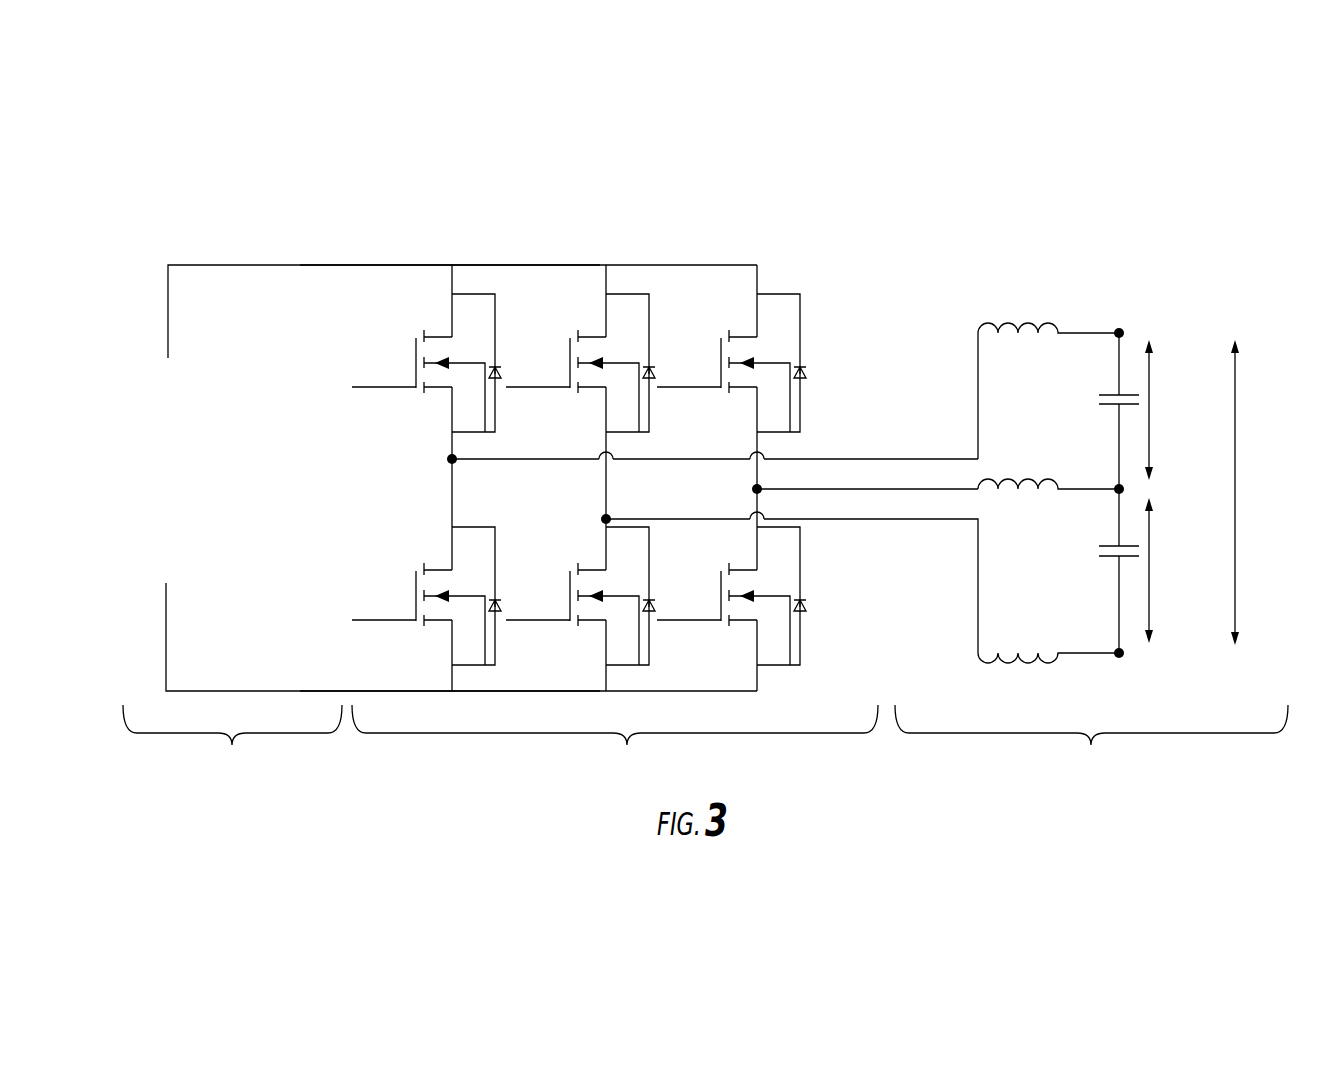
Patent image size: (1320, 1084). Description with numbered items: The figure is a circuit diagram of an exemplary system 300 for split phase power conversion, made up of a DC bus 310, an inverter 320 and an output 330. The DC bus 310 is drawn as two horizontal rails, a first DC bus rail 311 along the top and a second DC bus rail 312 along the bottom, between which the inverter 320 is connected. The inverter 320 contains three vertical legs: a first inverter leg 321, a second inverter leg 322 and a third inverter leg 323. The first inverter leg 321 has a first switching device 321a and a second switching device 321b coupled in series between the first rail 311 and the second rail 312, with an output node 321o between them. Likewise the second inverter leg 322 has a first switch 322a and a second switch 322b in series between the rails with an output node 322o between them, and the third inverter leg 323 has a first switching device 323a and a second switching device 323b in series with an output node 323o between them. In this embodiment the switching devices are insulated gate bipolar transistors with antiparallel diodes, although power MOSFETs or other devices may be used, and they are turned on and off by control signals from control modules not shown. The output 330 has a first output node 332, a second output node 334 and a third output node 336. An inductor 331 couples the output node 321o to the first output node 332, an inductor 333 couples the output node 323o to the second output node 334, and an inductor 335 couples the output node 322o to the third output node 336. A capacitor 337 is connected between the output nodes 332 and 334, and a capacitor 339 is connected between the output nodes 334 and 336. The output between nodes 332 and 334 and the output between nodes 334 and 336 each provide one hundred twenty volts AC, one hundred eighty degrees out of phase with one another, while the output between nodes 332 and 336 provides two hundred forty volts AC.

The system 300 is at (1116, 182).
The DC bus 310 is at (440, 521).
The first DC bus rail 311 is at (215, 263).
The second DC bus rail 312 is at (212, 690).
The inverter 320 is at (615, 743).
The first inverter leg 321 is at (446, 255).
The first switching device 321a is at (412, 372).
The second switching device 321b is at (412, 603).
The output node 321o is at (448, 459).
The second inverter leg 322 is at (601, 255).
The first switch 322a is at (566, 372).
The second switch 322b is at (566, 603).
The output node 322o is at (600, 519).
The third inverter leg 323 is at (752, 255).
The first switching device 323a is at (718, 372).
The second switching device 323b is at (718, 603).
The output node 323o is at (752, 489).
The output 330 is at (1092, 562).
The inductor 331 is at (1015, 318).
The first output node 332 is at (1120, 328).
The inductor 333 is at (1025, 478).
The second output node 334 is at (1117, 486).
The inductor 335 is at (1005, 668).
The third output node 336 is at (1122, 656).
The capacitor 337 is at (1113, 395).
The capacitor 339 is at (1113, 546).